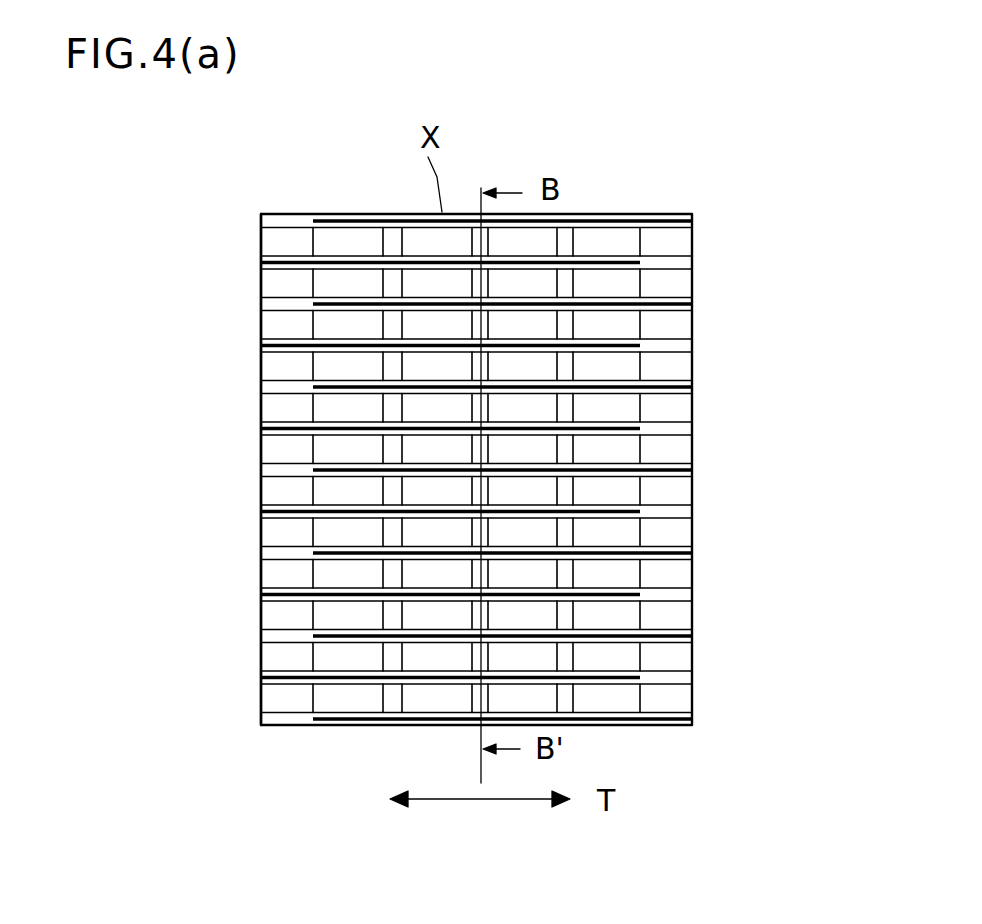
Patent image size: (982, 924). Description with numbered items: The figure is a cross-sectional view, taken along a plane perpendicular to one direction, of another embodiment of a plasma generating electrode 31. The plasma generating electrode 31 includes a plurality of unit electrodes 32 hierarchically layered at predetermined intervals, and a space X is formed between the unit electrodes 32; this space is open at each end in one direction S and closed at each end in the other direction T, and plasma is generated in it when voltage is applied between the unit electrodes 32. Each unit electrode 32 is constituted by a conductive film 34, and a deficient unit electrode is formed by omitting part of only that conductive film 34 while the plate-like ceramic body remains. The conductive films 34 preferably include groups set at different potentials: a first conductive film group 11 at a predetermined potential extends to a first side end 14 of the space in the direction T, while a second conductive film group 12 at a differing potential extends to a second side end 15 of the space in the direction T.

The first conductive film group 11 is at (663, 214).
The second conductive film group 12 is at (285, 263).
The first side end 14 is at (692, 240).
The second side end 15 is at (261, 289).
The plasma generating electrode 31 is at (840, 152).
The unit electrode 32 is at (603, 257).
The conductive film 34 is at (347, 261).